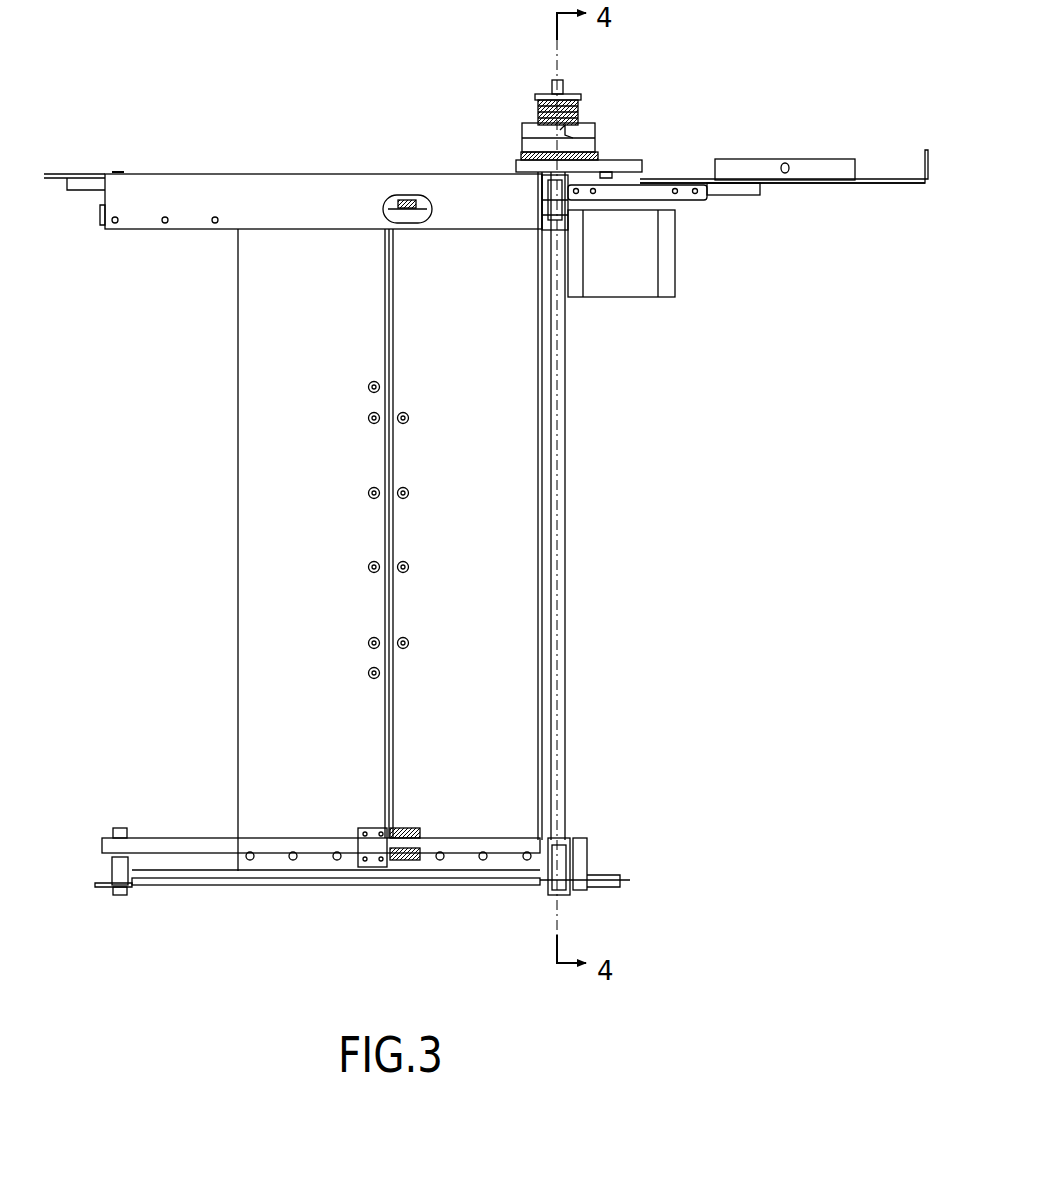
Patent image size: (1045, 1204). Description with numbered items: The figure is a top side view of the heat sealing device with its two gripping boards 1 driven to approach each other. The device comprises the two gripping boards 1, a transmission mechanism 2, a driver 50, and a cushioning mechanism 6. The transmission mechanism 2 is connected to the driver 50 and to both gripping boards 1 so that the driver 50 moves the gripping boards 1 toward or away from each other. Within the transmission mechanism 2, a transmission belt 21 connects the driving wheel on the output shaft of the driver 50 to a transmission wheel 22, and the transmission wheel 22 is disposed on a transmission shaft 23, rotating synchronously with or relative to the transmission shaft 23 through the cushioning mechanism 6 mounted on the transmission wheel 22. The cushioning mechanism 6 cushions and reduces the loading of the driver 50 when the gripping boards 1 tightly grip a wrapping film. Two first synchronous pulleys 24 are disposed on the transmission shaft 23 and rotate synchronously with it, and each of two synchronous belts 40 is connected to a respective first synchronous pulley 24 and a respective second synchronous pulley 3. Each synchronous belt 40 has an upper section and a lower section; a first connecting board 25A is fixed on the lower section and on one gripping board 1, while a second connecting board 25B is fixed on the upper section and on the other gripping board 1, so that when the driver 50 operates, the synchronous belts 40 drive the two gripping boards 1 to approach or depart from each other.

The gripping boards 1 is at (270, 335).
The transmission mechanism 2 is at (600, 640).
The second synchronous pulleys 3 is at (110, 835).
The cushioning mechanism 6 is at (518, 92).
The transmission belt 21 is at (640, 168).
The transmission wheel 22 is at (520, 156).
The transmission shaft 23 is at (565, 493).
The first synchronous pulleys 24 is at (572, 838).
The first connecting boards 25A is at (402, 828).
The second connecting boards 25B is at (372, 838).
The synchronous belts 40 is at (190, 845).
The driver 50 is at (630, 255).